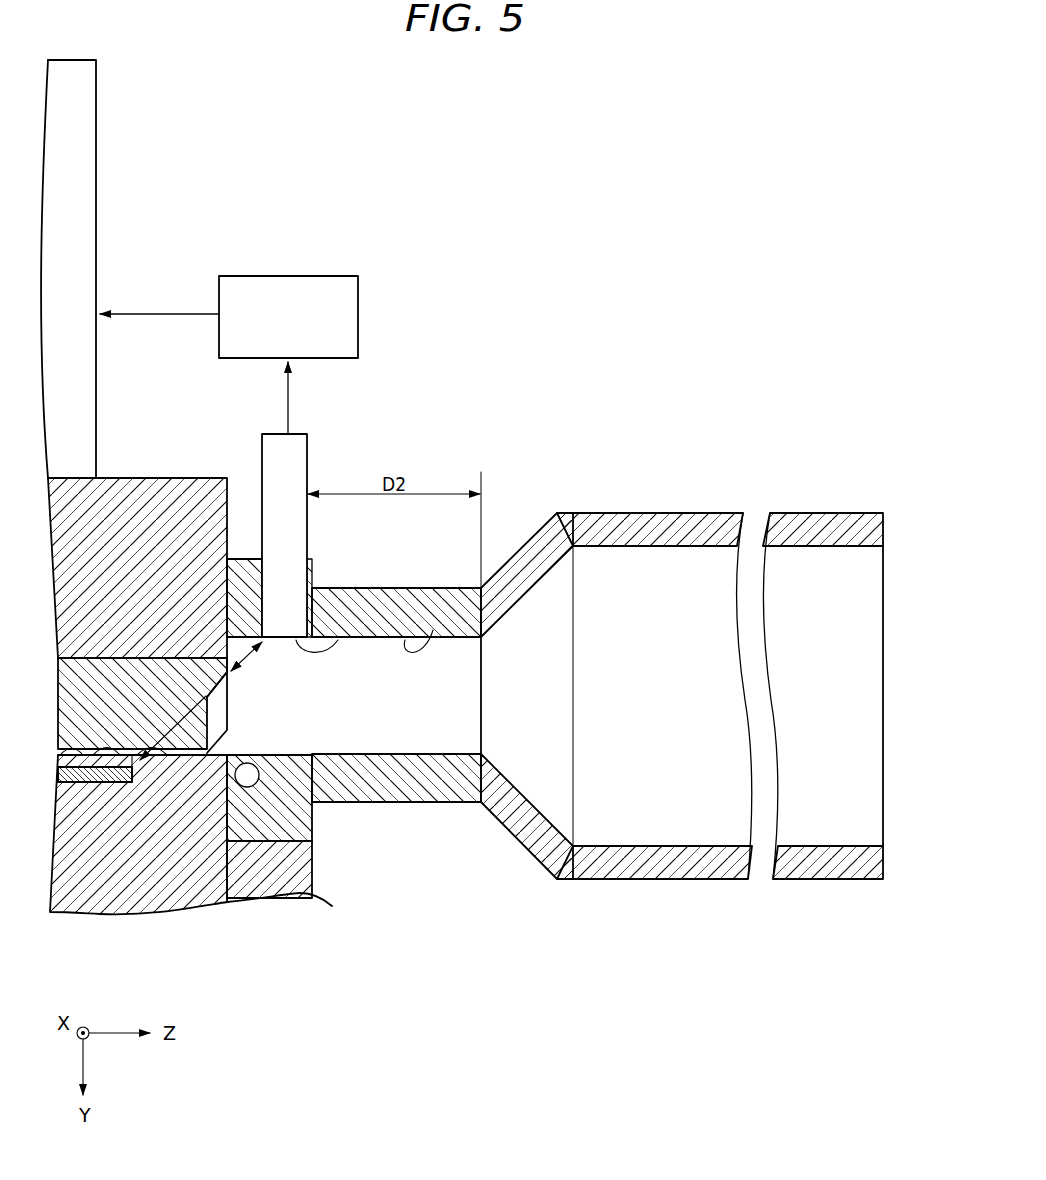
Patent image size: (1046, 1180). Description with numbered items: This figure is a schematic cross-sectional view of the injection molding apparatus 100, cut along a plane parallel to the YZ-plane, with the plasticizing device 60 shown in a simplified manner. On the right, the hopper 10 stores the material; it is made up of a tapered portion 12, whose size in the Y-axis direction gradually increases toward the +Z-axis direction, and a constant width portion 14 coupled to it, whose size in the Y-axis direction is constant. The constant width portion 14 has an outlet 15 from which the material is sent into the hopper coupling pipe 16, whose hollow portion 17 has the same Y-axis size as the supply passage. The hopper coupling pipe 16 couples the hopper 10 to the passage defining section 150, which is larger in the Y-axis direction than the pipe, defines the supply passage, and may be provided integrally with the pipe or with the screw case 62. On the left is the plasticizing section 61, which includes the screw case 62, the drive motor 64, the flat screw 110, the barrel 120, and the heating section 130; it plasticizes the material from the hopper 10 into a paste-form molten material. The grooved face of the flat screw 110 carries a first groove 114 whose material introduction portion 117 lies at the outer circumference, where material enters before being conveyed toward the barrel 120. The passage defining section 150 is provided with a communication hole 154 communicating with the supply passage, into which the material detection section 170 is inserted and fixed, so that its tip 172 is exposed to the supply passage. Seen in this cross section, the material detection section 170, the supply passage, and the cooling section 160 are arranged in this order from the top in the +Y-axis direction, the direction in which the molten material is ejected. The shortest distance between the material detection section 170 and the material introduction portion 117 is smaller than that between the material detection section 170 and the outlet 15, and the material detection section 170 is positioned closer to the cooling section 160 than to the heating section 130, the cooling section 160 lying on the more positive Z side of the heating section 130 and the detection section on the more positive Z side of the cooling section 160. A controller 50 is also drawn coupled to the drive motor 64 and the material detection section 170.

The hopper 10 is at (671, 606).
The tapered portion 12 is at (517, 577).
The constant width portion 14 is at (623, 535).
The outlet 15 is at (481, 720).
The hopper coupling pipe 16 is at (400, 775).
The hollow portion 17 is at (433, 630).
The controller 50 is at (328, 320).
The plasticizing device 60 is at (336, 511).
The plasticizing section 61 is at (311, 519).
The screw case 62 is at (100, 535).
The drive motor 64 is at (67, 194).
The injection molding apparatus 100 is at (783, 456).
The flat screw 110 is at (166, 568).
The first groove 114 is at (72, 787).
The material introduction portion 117 is at (212, 705).
The barrel 120 is at (191, 877).
The heating section 130 is at (108, 783).
The passage defining section 150 is at (320, 826).
The communication hole 154 is at (258, 590).
The cooling section 160 is at (250, 778).
The material detection section 170 is at (285, 477).
The tip 172 is at (338, 640).